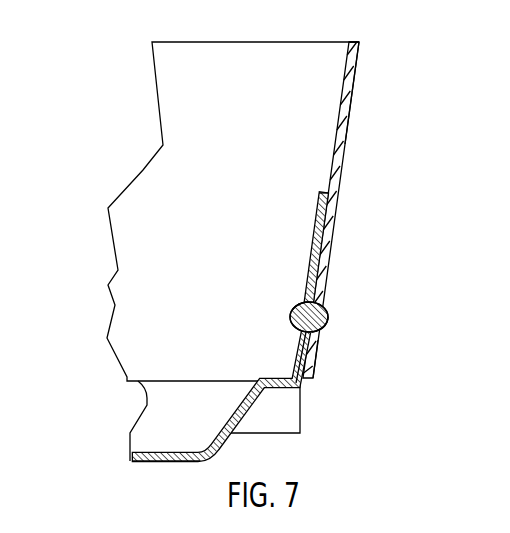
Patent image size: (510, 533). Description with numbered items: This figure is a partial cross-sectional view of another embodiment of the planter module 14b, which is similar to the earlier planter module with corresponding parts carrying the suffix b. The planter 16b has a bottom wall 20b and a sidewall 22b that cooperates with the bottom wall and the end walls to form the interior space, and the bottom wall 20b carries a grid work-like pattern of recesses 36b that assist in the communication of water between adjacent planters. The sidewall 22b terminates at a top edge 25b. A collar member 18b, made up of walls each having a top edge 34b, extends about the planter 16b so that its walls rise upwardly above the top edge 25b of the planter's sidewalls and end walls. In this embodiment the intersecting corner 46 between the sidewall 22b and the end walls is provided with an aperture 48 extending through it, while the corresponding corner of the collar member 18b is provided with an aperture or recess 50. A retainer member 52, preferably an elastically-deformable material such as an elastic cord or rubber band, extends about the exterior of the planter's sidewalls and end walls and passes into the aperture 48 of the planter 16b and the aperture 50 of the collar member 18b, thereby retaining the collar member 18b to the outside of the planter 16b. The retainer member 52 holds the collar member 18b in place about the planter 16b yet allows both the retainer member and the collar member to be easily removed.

The planter module 14b is at (123, 72).
The intersecting corner 46 is at (333, 40).
The top edge 34b is at (358, 60).
The collar member 18b is at (347, 112).
The top edge 25b is at (321, 190).
The sidewall 22b is at (323, 247).
The aperture 48 is at (301, 300).
The aperture or recess 50 is at (322, 302).
The retainer member 52 is at (328, 315).
The planter 16b is at (318, 344).
The bottom wall 20b is at (262, 378).
The recesses 36b is at (162, 452).